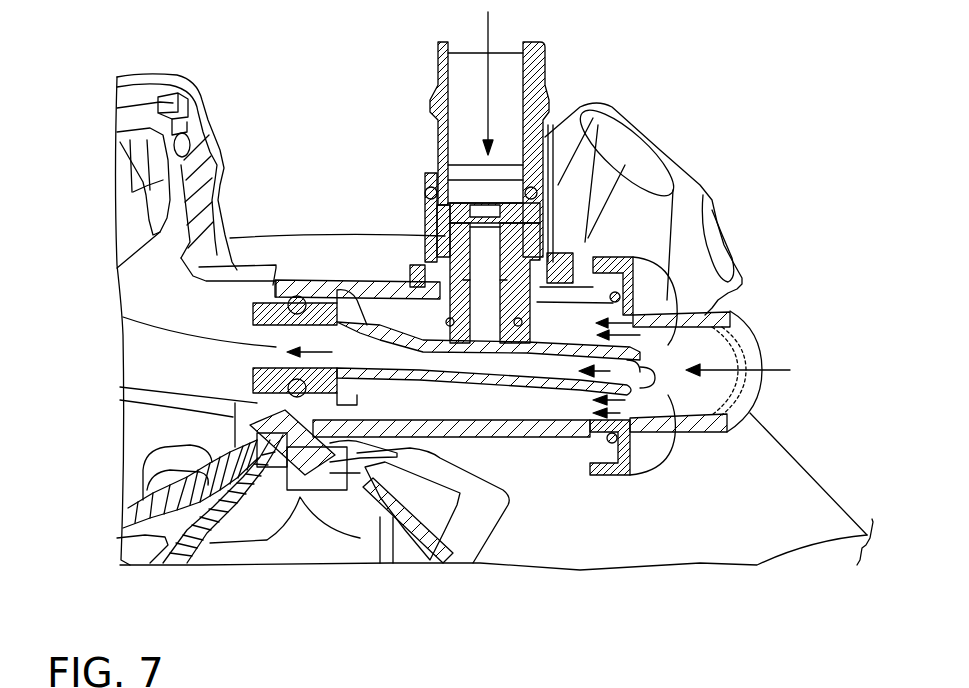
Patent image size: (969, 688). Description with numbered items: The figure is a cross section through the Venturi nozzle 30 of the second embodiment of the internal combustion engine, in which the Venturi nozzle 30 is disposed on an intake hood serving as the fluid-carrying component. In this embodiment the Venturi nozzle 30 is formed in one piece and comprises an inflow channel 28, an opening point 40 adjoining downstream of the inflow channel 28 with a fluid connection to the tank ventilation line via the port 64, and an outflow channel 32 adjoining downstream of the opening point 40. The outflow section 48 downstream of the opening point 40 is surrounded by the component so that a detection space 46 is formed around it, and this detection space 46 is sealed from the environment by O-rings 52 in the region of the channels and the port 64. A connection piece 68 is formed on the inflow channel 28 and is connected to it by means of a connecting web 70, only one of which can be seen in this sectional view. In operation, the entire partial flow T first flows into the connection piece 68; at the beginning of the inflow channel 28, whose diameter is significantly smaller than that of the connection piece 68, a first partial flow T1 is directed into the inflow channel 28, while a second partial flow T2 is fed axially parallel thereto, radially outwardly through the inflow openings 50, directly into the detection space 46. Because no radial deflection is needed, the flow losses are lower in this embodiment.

The inflow channel 28 is at (578, 375).
The Venturi nozzle 30 is at (528, 396).
The outflow channel 32 is at (363, 358).
The opening point 40 is at (418, 315).
The detection space 46 is at (408, 323).
The outflow section 48 is at (420, 373).
The inflow openings 50 is at (690, 313).
The O-rings 52 is at (297, 300).
The port for the tank ventilation line 64 is at (533, 148).
The connection piece 68 is at (735, 350).
The connecting web 70 is at (657, 381).
The partial flow T is at (684, 381).
The first partial flow T1 is at (610, 365).
The second partial flow T2 is at (660, 340).